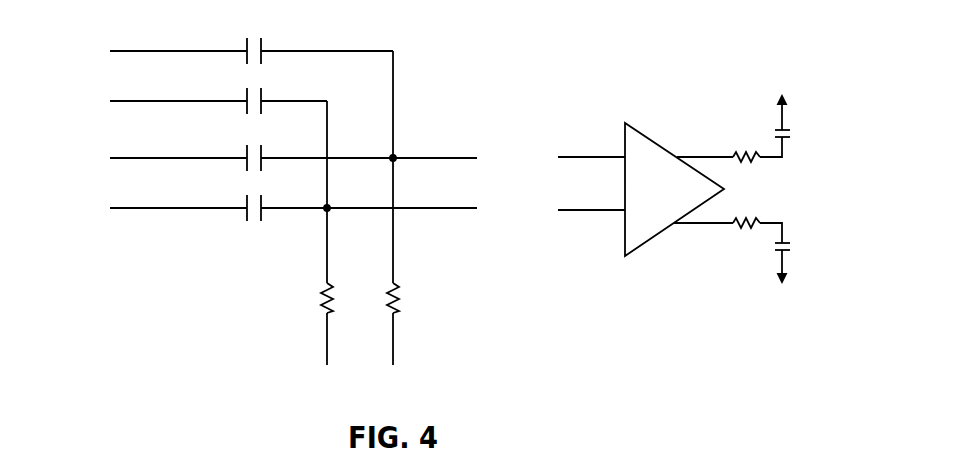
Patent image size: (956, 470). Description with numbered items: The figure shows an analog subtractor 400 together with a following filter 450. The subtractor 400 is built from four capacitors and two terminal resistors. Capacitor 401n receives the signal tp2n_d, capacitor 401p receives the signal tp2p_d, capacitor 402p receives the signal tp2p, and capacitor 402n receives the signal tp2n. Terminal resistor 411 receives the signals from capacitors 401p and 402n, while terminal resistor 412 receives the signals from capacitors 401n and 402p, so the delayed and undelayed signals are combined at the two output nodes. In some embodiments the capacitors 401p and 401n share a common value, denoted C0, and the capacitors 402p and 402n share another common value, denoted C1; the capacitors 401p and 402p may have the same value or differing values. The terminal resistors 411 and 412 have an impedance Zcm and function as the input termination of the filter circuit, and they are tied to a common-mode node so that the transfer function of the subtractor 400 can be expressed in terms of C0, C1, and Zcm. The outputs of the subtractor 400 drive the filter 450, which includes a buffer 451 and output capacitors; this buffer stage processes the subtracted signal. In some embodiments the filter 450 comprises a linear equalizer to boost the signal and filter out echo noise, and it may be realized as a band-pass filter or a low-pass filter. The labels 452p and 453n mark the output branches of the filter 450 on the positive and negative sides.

The subtractor 400 is at (213, 17).
The capacitor 401n is at (278, 50).
The capacitor 401p is at (278, 100).
The capacitor 402p is at (278, 157).
The capacitor 402n is at (278, 207).
The terminal resistor 411 is at (300, 298).
The terminal resistor 412 is at (414, 298).
The filter 450 is at (629, 76).
The buffer 451 is at (674, 189).
The RC filter (positive) 452p is at (773, 129).
The RC filter (negative) 453n is at (772, 230).